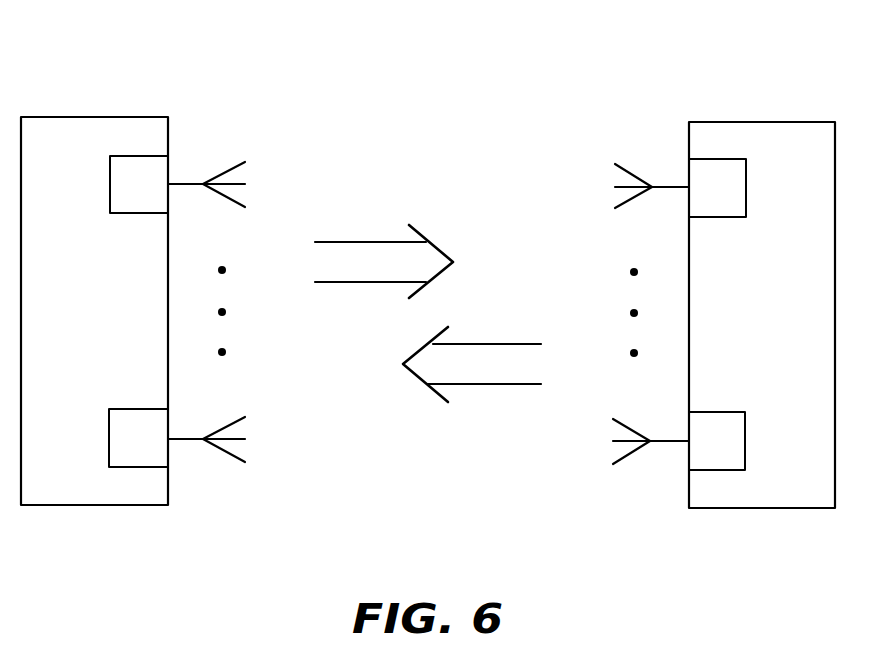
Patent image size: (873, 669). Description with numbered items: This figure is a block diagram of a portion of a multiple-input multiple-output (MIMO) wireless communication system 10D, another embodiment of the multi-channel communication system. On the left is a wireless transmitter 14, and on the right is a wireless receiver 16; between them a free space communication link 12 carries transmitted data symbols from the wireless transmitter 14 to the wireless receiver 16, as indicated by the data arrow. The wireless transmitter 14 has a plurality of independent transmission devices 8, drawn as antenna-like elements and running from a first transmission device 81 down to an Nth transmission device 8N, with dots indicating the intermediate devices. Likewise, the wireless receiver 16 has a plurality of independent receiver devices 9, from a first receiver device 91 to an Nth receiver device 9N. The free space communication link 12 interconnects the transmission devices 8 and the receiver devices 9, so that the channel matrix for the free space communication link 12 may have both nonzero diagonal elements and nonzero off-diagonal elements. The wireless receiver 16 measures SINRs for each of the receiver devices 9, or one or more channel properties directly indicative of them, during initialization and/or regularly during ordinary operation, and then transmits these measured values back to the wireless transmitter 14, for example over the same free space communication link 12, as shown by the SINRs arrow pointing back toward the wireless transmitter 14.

The multiple-input multiple-output (MIMO) wireless communication system 10D is at (538, 83).
The wireless transmitter 14 is at (72, 478).
The wireless receiver 16 is at (806, 482).
The free space communication link 12 is at (437, 504).
The transmission devices 8 is at (206, 317).
The first transmission device 81 is at (197, 182).
The Nth transmission device 8N is at (191, 442).
The receiver devices 9 is at (651, 319).
The first receiver device 91 is at (660, 185).
The Nth receiver device 9N is at (655, 445).